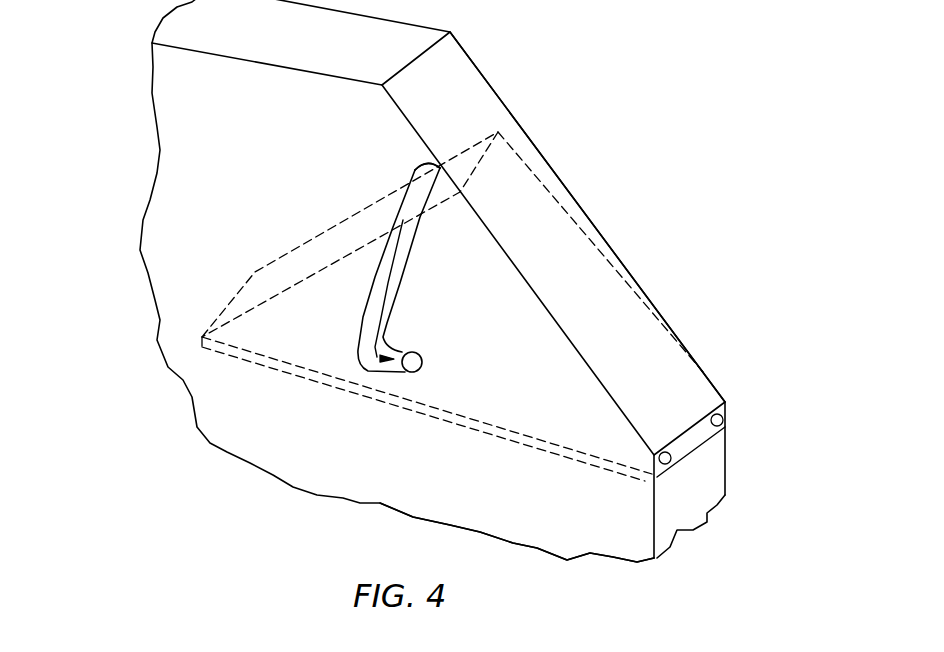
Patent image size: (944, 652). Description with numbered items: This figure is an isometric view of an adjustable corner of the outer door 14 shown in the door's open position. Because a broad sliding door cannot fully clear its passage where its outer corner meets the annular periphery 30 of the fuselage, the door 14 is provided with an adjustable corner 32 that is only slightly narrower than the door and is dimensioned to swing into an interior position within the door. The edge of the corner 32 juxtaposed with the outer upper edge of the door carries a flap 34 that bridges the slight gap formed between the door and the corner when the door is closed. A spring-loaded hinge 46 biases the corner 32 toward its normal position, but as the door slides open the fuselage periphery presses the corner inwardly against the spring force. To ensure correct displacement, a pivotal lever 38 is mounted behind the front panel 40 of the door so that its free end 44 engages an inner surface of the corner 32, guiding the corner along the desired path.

The outer door 14 is at (143, 472).
The annular periphery of the fuselage 30 is at (633, 535).
The adjustable corner 32 is at (513, 170).
The flap 34 is at (213, 348).
The pivotal lever 38 is at (383, 293).
The front panel 40 is at (494, 507).
The free end 44 is at (428, 167).
The spring-loaded hinge 46 is at (692, 440).